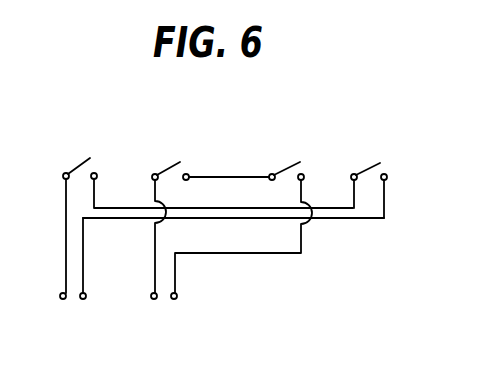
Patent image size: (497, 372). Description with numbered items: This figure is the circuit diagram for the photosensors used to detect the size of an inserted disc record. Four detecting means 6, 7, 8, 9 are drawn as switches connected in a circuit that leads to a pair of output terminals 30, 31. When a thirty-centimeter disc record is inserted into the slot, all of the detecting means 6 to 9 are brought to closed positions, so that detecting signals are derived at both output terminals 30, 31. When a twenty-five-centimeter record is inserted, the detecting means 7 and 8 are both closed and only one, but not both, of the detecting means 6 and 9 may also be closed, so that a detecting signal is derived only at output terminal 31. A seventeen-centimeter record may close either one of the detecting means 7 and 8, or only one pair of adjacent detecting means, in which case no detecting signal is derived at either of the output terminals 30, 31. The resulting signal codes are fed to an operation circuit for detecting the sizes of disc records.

The detecting means 6 is at (79, 165).
The detecting means 7 is at (168, 158).
The detecting means 8 is at (278, 160).
The detecting means 9 is at (367, 160).
The output terminal 30 is at (82, 299).
The output terminal 31 is at (155, 299).